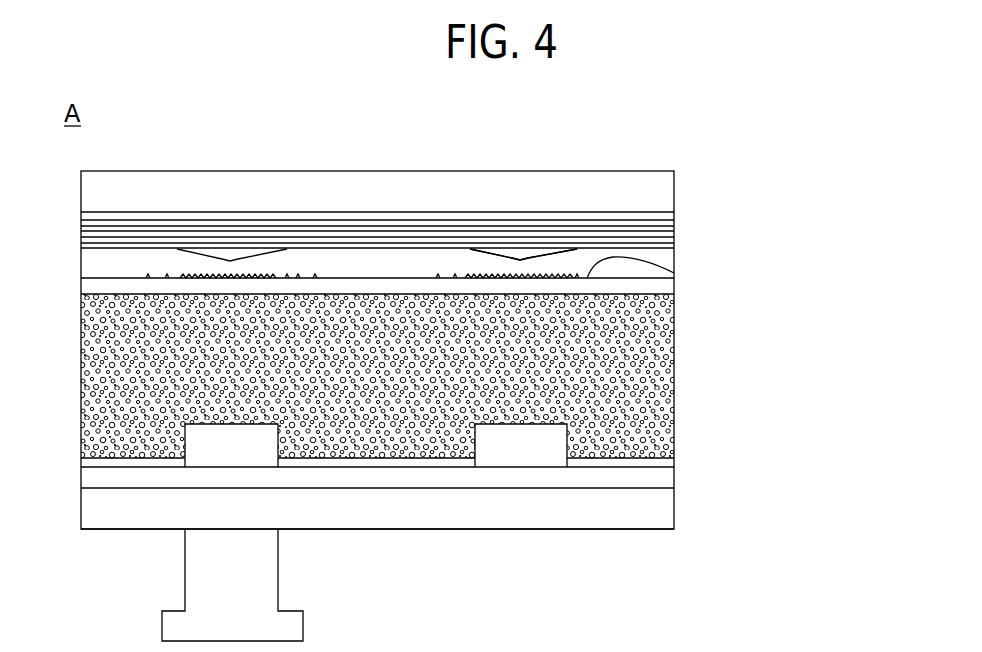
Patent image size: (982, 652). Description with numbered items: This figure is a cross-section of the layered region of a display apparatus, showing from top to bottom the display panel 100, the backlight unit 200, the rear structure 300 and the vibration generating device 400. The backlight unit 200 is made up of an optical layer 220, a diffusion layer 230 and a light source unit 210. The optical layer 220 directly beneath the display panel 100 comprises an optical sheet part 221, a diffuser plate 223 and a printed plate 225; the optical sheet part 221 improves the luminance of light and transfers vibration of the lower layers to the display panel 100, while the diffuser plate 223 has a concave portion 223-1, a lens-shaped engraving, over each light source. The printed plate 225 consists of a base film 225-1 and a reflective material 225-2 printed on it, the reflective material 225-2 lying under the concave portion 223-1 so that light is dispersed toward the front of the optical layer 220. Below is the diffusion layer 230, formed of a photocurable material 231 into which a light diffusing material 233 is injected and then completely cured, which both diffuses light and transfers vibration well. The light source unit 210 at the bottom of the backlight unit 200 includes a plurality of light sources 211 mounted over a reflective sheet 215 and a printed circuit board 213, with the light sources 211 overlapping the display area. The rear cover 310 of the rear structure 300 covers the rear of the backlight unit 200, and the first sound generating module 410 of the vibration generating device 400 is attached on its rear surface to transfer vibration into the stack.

The display panel 100 is at (660, 190).
The backlight unit 200 is at (884, 265).
The light source unit 210 is at (479, 459).
The light sources 211 is at (557, 437).
The printed circuit board 213 is at (665, 476).
The reflective sheet 215 is at (674, 458).
The optical layer 220 is at (479, 221).
The optical sheet part 221 is at (677, 212).
The diffuser plate 223 is at (666, 258).
The concave portion 223-1 is at (527, 258).
The printed plate 225 is at (451, 289).
The base film 225-1 is at (665, 287).
The reflective material 225-2 is at (668, 271).
The diffusion layer 230 is at (479, 376).
The photocurable material 231 is at (674, 355).
The light diffusing material 233 is at (674, 383).
The rear structure 300 is at (462, 540).
The rear cover 310 is at (665, 507).
The vibration generating device 400 is at (304, 585).
The first sound generating module 410 is at (270, 565).